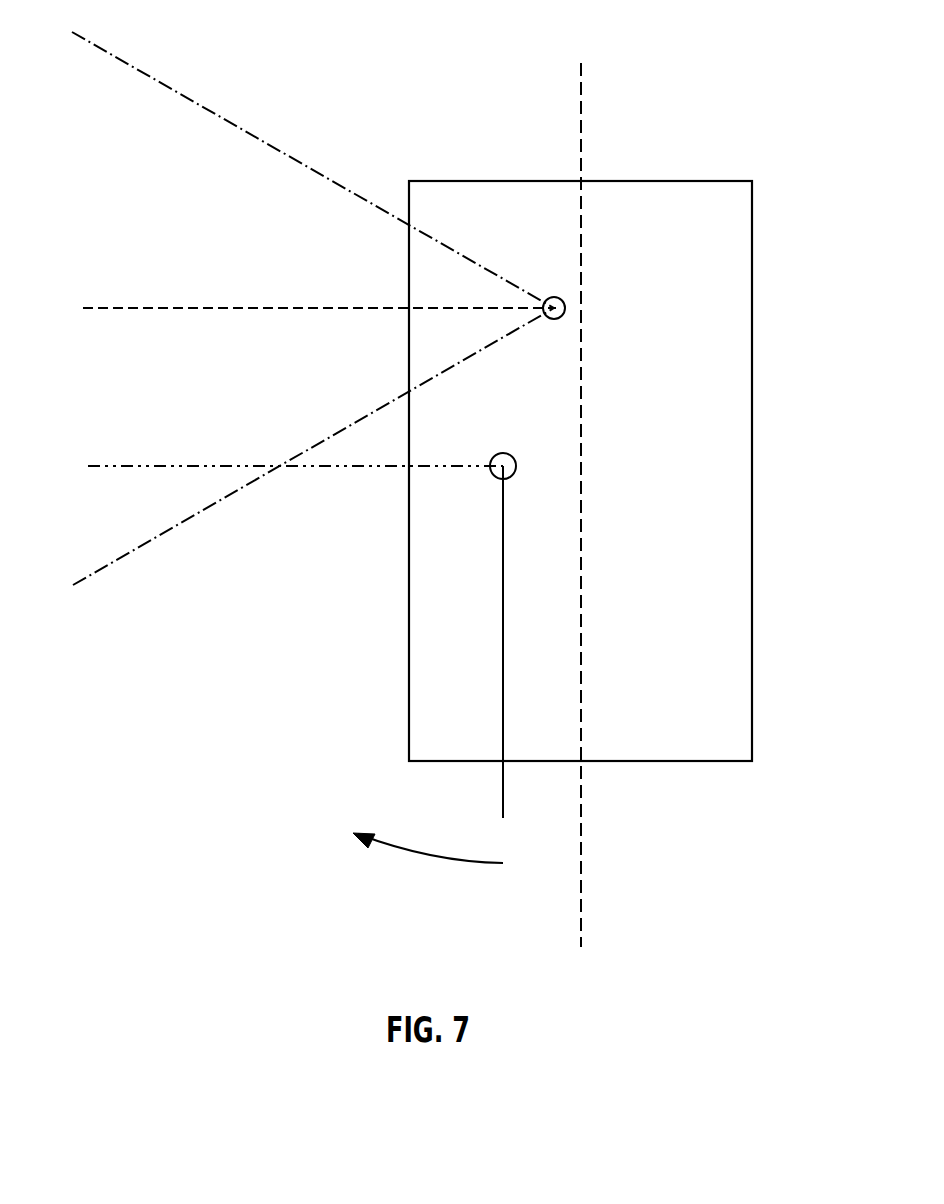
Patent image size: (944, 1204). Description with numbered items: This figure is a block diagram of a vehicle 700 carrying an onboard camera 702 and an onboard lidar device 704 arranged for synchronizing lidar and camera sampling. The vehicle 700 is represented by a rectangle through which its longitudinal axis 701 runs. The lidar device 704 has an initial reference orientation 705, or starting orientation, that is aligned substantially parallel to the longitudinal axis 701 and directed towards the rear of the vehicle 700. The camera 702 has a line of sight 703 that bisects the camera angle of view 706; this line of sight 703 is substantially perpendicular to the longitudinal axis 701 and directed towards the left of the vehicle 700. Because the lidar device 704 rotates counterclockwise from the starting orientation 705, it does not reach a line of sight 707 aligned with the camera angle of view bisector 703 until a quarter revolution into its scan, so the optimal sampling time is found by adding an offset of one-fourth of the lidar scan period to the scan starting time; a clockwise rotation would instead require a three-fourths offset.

The vehicle 700 is at (753, 442).
The longitudinal axis 701 is at (581, 135).
The camera 702 is at (549, 300).
The line of sight 703 is at (138, 307).
The lidar device 704 is at (502, 453).
The initial reference orientation 705 is at (503, 674).
The camera angle of view 706 is at (265, 138).
The line of sight 707 is at (138, 465).